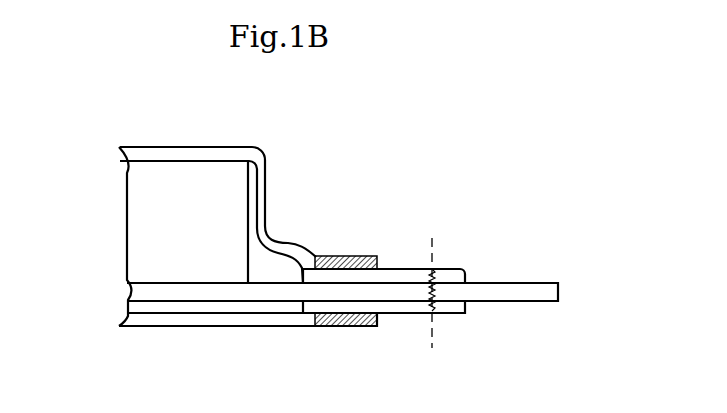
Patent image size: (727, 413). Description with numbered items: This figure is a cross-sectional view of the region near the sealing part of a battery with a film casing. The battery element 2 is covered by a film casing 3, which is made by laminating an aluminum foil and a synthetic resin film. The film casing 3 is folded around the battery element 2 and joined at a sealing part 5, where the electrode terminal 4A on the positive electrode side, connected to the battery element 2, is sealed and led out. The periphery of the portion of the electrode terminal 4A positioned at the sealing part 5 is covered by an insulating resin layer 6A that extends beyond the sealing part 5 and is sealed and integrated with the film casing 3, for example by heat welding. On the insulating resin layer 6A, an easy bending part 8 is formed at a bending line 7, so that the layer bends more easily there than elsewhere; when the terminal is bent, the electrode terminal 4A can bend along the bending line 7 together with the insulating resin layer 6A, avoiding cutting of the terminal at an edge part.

The battery element 2 is at (167, 208).
The film casing 3 is at (263, 177).
The sealing part 5 is at (342, 257).
The electrode terminal 4A is at (508, 293).
The insulating resin layer 6A is at (455, 275).
The bending line 7 is at (448, 249).
The easy bending part 8 is at (437, 305).